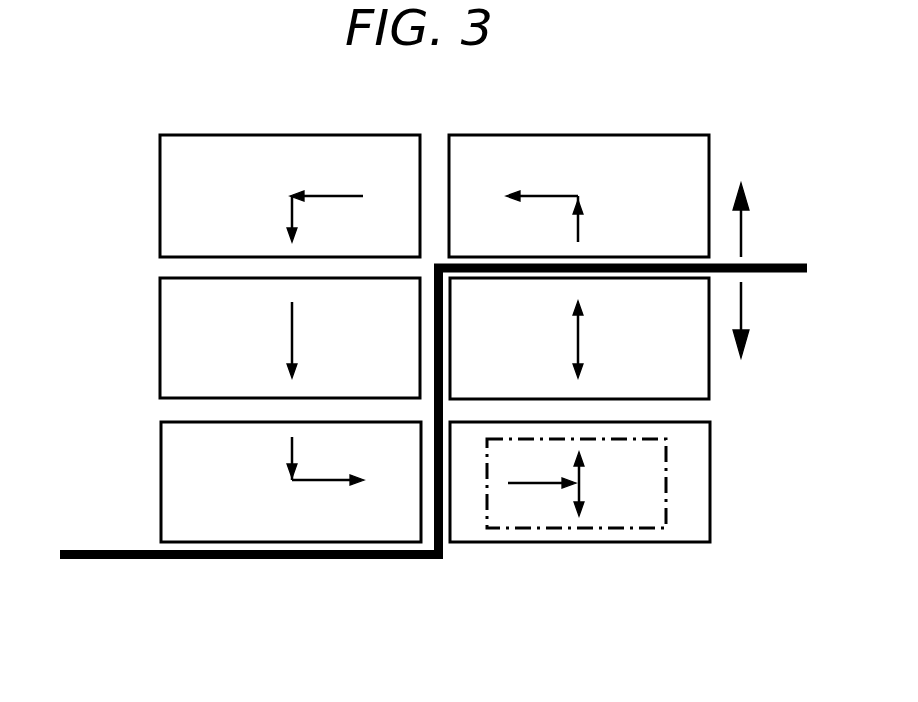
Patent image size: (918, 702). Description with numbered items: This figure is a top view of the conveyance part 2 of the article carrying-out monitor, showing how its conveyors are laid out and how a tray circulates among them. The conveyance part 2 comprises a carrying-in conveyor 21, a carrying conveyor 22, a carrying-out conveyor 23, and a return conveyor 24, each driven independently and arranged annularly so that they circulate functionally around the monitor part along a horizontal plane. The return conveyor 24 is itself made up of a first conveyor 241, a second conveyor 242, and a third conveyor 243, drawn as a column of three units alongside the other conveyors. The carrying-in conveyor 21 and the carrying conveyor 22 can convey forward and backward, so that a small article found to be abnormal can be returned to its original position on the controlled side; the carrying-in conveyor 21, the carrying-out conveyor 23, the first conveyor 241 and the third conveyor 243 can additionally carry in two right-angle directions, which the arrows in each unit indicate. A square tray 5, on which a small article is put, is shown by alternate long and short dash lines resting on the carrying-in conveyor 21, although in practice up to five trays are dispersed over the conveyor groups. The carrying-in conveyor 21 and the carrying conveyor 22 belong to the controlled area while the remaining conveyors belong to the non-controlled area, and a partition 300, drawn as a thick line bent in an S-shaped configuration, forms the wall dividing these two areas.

The conveyance part 2 is at (730, 683).
The tray 5 is at (579, 532).
The carrying-in conveyor 21 is at (685, 515).
The carrying conveyor 22 is at (697, 356).
The carrying-out conveyor 23 is at (695, 162).
The return conveyor 24 is at (53, 233).
The first conveyor 241 is at (185, 215).
The second conveyor 242 is at (193, 333).
The third conveyor 243 is at (197, 475).
The partition 300 is at (146, 560).